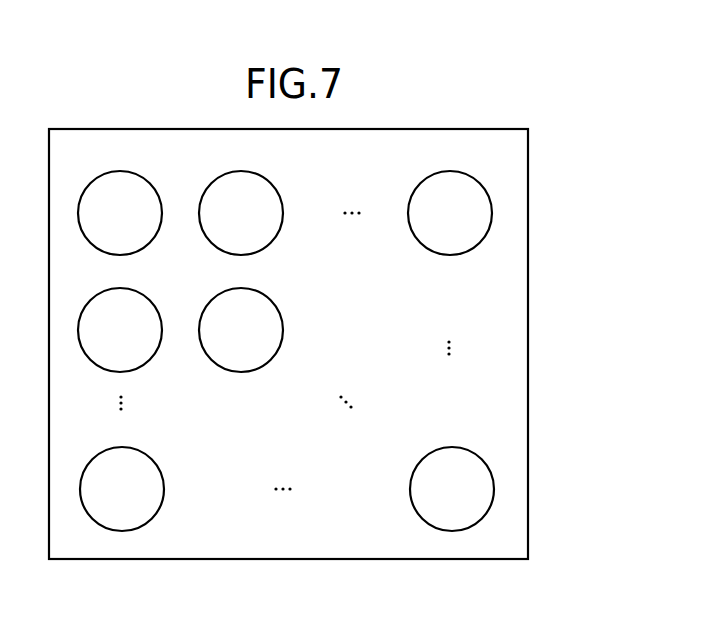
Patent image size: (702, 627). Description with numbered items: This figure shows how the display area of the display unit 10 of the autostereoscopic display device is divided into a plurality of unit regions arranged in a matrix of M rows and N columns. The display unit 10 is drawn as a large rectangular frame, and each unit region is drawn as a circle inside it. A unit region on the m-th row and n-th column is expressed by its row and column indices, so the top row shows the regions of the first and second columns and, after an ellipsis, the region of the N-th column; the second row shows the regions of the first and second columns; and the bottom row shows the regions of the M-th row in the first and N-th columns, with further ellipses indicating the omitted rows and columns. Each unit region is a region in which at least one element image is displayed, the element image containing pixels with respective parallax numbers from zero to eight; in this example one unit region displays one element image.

The display unit 10 is at (537, 165).